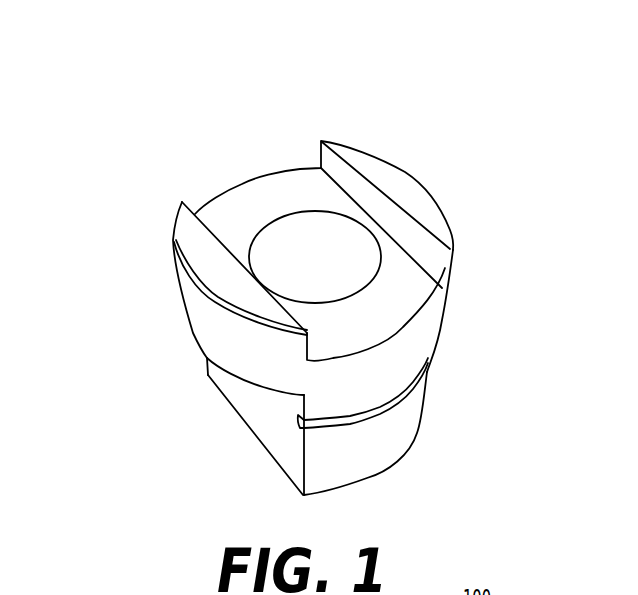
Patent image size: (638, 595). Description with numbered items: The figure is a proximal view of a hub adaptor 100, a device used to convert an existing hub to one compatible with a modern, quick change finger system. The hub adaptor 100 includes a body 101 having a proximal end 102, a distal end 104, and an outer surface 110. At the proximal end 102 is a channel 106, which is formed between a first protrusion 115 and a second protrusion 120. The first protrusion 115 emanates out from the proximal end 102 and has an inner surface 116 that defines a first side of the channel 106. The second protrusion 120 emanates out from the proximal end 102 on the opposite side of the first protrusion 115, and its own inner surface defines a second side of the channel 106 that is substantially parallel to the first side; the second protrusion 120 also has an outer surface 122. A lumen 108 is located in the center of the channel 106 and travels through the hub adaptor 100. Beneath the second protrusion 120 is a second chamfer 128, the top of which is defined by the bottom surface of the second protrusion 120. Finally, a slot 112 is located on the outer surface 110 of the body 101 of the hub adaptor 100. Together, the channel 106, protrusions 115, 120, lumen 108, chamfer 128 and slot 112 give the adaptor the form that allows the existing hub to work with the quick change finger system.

The hub adaptor 100 is at (244, 195).
The body 101 is at (413, 343).
The proximal end 102 is at (432, 183).
The distal end 104 is at (275, 441).
The channel 106 is at (232, 209).
The lumen 108 is at (317, 237).
The outer surface 110 is at (380, 434).
The slot 112 is at (395, 405).
The first protrusion 115 is at (433, 213).
The inner surface 116 is at (413, 237).
The second protrusion 120 is at (203, 252).
The outer surface 122 is at (193, 312).
The second chamfer 128 is at (248, 396).